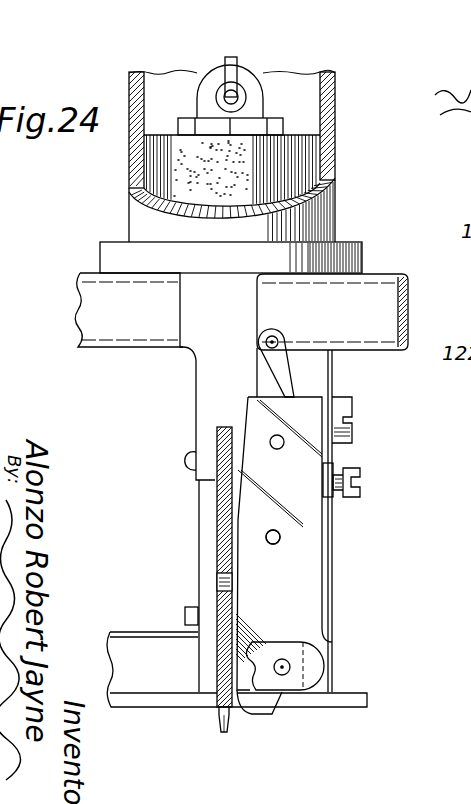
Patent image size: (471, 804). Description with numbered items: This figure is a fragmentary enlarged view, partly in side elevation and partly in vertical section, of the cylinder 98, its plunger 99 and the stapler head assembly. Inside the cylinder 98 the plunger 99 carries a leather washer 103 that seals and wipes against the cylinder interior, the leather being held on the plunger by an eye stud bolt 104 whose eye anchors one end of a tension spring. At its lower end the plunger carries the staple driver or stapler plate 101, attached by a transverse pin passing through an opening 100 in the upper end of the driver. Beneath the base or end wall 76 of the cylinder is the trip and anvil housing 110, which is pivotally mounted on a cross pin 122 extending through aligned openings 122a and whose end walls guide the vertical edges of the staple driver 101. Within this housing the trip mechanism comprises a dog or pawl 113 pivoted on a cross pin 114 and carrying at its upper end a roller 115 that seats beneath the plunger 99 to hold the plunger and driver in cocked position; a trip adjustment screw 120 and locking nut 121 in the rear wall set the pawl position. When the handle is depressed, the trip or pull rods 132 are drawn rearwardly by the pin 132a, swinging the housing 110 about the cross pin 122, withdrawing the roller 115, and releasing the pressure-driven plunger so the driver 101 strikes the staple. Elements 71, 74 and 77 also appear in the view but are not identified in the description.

The base 71 is at (140, 708).
The cross bar 74 is at (133, 329).
The base or end wall 76 is at (372, 255).
The arm 77 is at (410, 293).
The cylinder 98 is at (346, 111).
The plunger 99 is at (188, 216).
The opening 100 is at (232, 72).
The staple driver or stapler plate 101 is at (208, 535).
The leather washer 103 is at (337, 151).
The eye stud bolt 104 is at (279, 118).
The trip and anvil housing 110 is at (334, 596).
The dog or pawl 113 is at (278, 375).
The cross pin 114 is at (277, 449).
The roller 115 is at (280, 336).
The trip adjustment screw 120 is at (355, 470).
The locking nut 121 is at (336, 499).
The cross pin 122 is at (280, 538).
The aligned openings 122a is at (274, 545).
The trip or pull rods 132 is at (312, 650).
The pin 132a is at (286, 670).